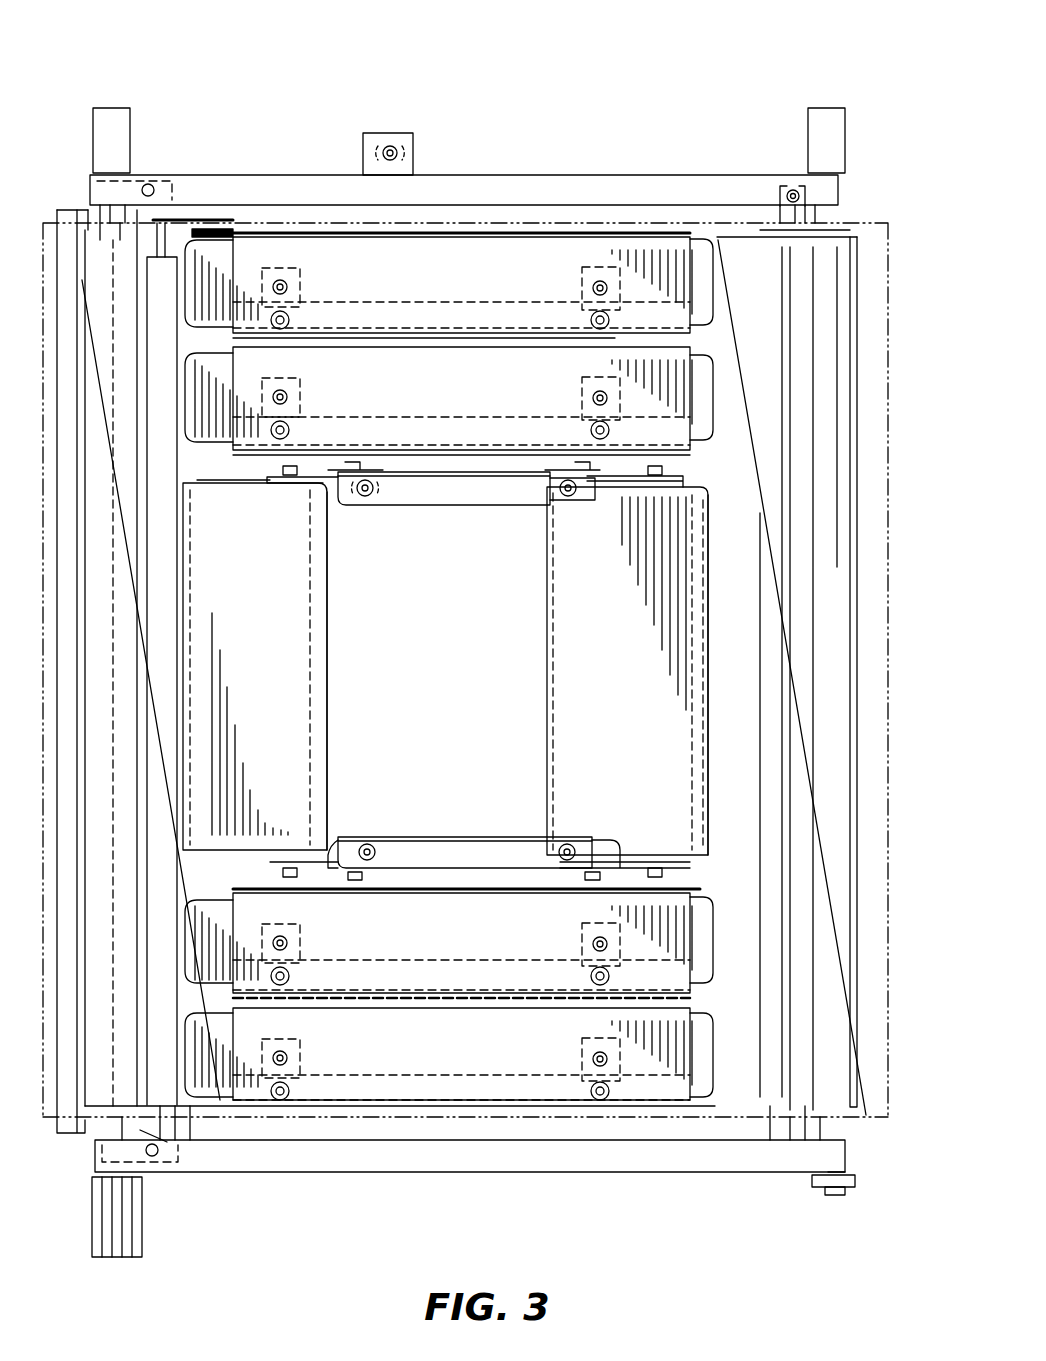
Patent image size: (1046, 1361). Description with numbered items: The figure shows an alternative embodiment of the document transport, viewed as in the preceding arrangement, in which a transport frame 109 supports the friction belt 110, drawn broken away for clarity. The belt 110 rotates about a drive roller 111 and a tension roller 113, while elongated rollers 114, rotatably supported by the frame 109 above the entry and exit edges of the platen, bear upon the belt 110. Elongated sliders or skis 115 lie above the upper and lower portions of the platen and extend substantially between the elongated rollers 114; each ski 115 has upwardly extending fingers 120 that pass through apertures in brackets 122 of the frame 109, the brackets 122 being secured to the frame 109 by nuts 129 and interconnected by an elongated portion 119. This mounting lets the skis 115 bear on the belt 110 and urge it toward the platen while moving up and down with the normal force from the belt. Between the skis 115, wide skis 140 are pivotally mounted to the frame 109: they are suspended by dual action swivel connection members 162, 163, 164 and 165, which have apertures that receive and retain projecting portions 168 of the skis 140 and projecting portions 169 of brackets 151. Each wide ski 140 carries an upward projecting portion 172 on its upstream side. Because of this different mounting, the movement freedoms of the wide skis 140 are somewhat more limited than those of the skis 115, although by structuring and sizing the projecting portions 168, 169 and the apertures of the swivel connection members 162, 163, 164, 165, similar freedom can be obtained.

The transport frame 109 is at (497, 156).
The friction belt 110 is at (750, 257).
The drive roller 111 is at (123, 243).
The tension roller 113 is at (835, 1060).
The elongated rollers 114 is at (165, 277).
The skis 115 is at (540, 258).
The elongated portion 119 is at (343, 302).
The fingers 120 is at (593, 1060).
The brackets 122 is at (590, 1040).
The nuts 129 is at (605, 1110).
The wide skis 140 is at (588, 618).
The brackets 151 is at (446, 485).
The swivel connection member 162 is at (307, 475).
The swivel connection member 163 is at (560, 470).
The swivel connection member 164 is at (625, 870).
The swivel connection member 165 is at (335, 842).
The projecting portions 168 is at (293, 467).
The projecting portions 169 is at (355, 463).
The upward projecting portion 172 is at (330, 605).